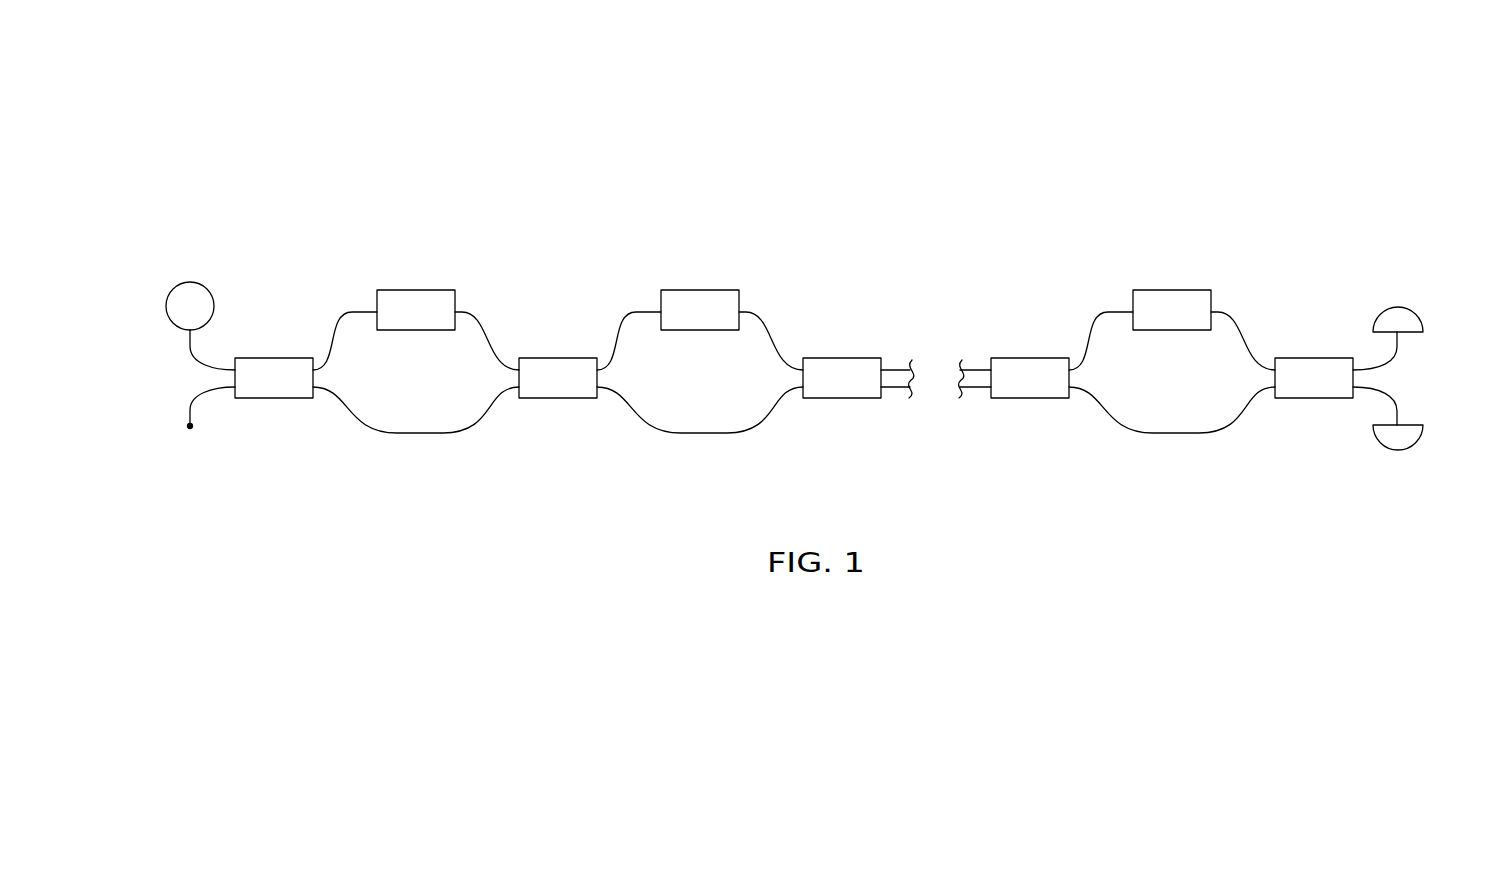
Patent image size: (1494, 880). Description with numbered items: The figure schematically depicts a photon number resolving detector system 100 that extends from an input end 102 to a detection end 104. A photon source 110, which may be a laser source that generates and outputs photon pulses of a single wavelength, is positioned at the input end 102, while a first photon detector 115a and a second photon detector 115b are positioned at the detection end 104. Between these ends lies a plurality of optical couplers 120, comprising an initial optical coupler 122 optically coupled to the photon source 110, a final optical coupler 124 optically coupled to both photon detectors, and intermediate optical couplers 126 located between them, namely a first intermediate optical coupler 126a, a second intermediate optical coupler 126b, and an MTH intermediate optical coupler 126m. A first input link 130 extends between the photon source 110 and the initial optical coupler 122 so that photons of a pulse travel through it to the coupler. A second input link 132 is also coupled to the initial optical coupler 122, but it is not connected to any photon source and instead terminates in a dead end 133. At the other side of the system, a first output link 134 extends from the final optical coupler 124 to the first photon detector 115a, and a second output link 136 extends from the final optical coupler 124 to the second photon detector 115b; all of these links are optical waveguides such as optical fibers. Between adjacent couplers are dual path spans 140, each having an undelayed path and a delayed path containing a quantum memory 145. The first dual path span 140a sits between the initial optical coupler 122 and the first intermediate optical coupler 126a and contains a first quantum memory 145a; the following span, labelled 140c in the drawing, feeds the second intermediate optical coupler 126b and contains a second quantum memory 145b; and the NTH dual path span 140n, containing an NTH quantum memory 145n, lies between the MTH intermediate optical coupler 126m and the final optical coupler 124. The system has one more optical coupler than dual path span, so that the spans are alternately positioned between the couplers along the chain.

The photon number resolving detector system 100 is at (217, 75).
The input end 102 is at (148, 247).
The detection end 104 is at (1420, 257).
The photon source 110 is at (190, 283).
The first photon detector 115a is at (1398, 307).
The second photon detector 115b is at (1397, 450).
The optical couplers 120 is at (268, 352).
The initial optical coupler 122 is at (275, 398).
The final optical coupler 124 is at (1312, 398).
The intermediate optical couplers 126 is at (550, 352).
The first intermediate optical coupler 126a is at (558, 398).
The second intermediate optical coupler 126b is at (840, 398).
The MTH intermediate optical coupler 126m is at (1030, 398).
The first input link 130 is at (190, 345).
The second input link 132 is at (190, 408).
The dead end 133 is at (189, 430).
The first output link 134 is at (1400, 342).
The second output link 136 is at (1400, 413).
The dual path spans 140 is at (445, 283).
The first dual path span 140a is at (388, 283).
The second phase modulator 140c is at (672, 283).
The NTH dual path span 140n is at (1145, 283).
The quantum memory 145 is at (433, 330).
The first quantum memory 145a is at (403, 330).
The second quantum memory 145b is at (698, 330).
The NTH quantum memory 145n is at (1170, 330).